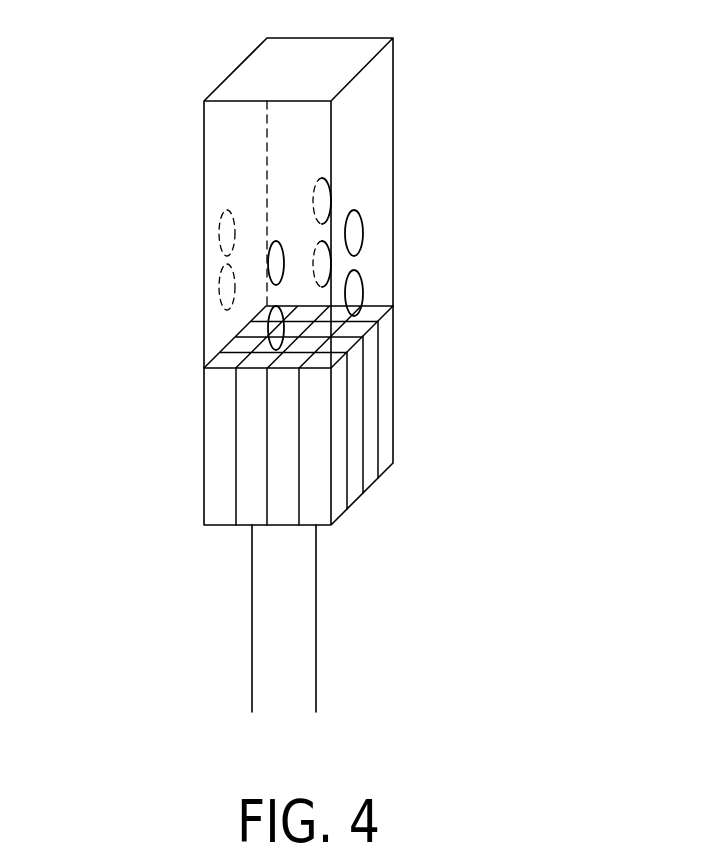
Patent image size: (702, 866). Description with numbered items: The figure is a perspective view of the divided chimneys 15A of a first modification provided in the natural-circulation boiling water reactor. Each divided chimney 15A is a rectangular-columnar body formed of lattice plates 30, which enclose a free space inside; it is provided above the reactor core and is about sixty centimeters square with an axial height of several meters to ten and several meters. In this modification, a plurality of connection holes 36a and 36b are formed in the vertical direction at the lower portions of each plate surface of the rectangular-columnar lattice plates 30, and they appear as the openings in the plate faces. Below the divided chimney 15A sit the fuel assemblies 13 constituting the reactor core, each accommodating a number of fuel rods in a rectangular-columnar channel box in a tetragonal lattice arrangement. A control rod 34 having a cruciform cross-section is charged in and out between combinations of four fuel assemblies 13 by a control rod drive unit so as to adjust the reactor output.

The divided chimneys 15A is at (292, 360).
The lattice plates 30 is at (365, 145).
The connection holes 36a is at (268, 263).
The connection holes 36b is at (212, 302).
The fuel assemblies 13 is at (347, 452).
The control rod 34 is at (252, 652).